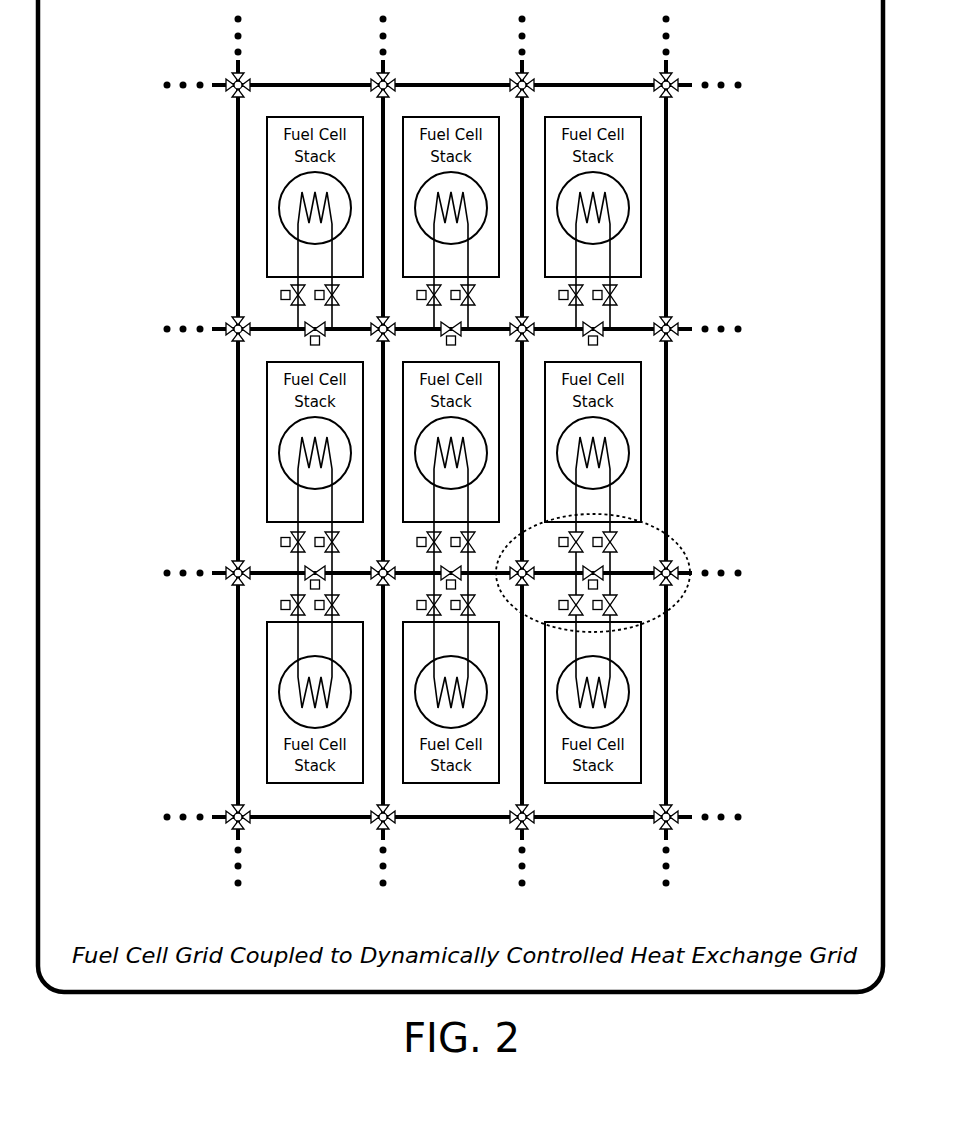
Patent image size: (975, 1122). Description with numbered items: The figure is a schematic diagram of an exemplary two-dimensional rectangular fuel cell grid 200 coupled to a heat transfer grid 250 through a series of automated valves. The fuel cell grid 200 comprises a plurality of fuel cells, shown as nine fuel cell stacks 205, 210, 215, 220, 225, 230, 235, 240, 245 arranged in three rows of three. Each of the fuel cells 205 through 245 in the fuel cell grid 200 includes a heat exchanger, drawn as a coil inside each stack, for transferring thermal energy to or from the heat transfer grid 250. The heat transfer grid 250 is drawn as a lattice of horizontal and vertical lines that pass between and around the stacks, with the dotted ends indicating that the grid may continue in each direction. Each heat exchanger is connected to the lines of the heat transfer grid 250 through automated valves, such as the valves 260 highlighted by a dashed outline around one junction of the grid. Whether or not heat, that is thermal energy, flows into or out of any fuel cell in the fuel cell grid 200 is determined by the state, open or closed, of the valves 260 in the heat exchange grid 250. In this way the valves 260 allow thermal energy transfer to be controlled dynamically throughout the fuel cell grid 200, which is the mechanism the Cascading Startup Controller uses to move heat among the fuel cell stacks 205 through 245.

The fuel cell grid 200 is at (377, 452).
The fuel cell 205 is at (290, 117).
The fuel cell 210 is at (426, 117).
The fuel cell 215 is at (568, 117).
The fuel cell 220 is at (326, 362).
The fuel cell 225 is at (464, 362).
The fuel cell 230 is at (605, 362).
The fuel cell 235 is at (297, 783).
The fuel cell 240 is at (433, 783).
The fuel cell 245 is at (575, 783).
The heat transfer grid 250 is at (226, 782).
The valves 260 is at (681, 544).